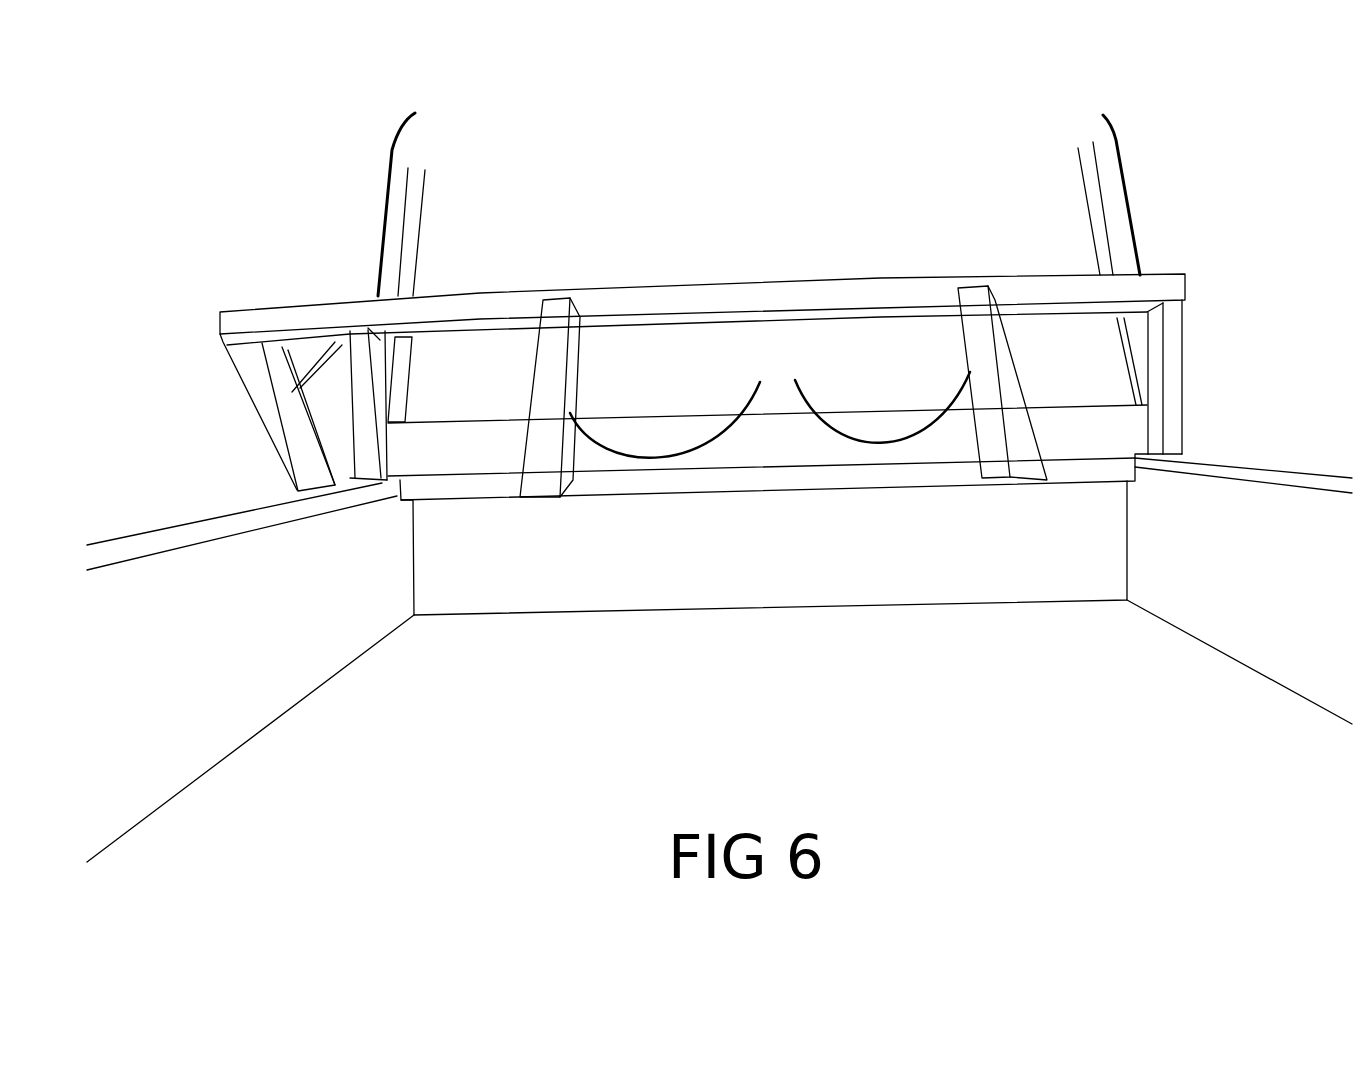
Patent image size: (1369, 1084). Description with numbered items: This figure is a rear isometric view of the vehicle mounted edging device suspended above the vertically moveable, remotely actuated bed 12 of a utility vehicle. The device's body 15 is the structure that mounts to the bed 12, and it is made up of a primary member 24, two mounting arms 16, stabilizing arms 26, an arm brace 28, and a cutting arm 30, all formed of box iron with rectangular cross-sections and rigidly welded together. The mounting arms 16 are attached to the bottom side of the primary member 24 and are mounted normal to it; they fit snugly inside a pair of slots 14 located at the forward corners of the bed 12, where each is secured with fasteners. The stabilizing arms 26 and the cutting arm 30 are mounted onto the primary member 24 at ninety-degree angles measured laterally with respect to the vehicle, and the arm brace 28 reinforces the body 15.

The remotely actuated bed 12 is at (1323, 643).
The slots 14 is at (382, 483).
The body 15 is at (328, 290).
The mounting arms 16 is at (387, 438).
The primary member 24 is at (826, 265).
The stabilizing arms 26 is at (770, 403).
The arm brace 28 is at (293, 353).
The cutting arm 30 is at (280, 425).